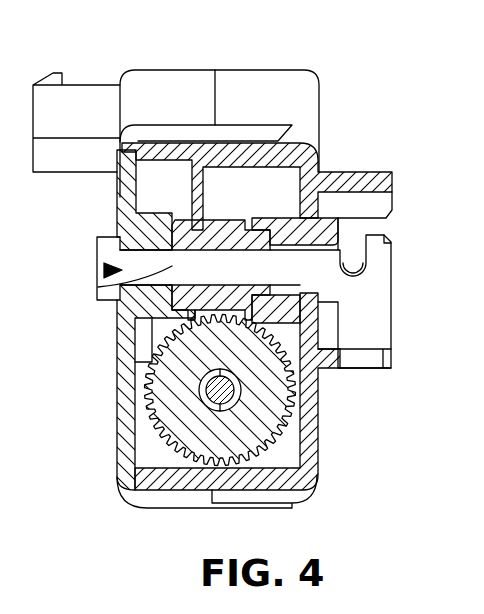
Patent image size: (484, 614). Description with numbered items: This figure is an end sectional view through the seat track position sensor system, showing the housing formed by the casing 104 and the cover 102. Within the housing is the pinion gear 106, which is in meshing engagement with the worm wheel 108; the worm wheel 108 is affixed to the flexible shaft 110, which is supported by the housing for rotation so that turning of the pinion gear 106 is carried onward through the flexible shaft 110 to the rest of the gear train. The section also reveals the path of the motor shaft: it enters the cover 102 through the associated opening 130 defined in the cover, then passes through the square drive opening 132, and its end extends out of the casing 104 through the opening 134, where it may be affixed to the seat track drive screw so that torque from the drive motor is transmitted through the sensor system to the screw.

The cover 102 is at (132, 74).
The casing 104 is at (320, 95).
The pinion gear 106 is at (318, 365).
The worm wheel 108 is at (148, 412).
The flexible shaft 110 is at (207, 408).
The opening 130 is at (104, 270).
The square drive opening 132 is at (97, 287).
The opening 134 is at (318, 287).